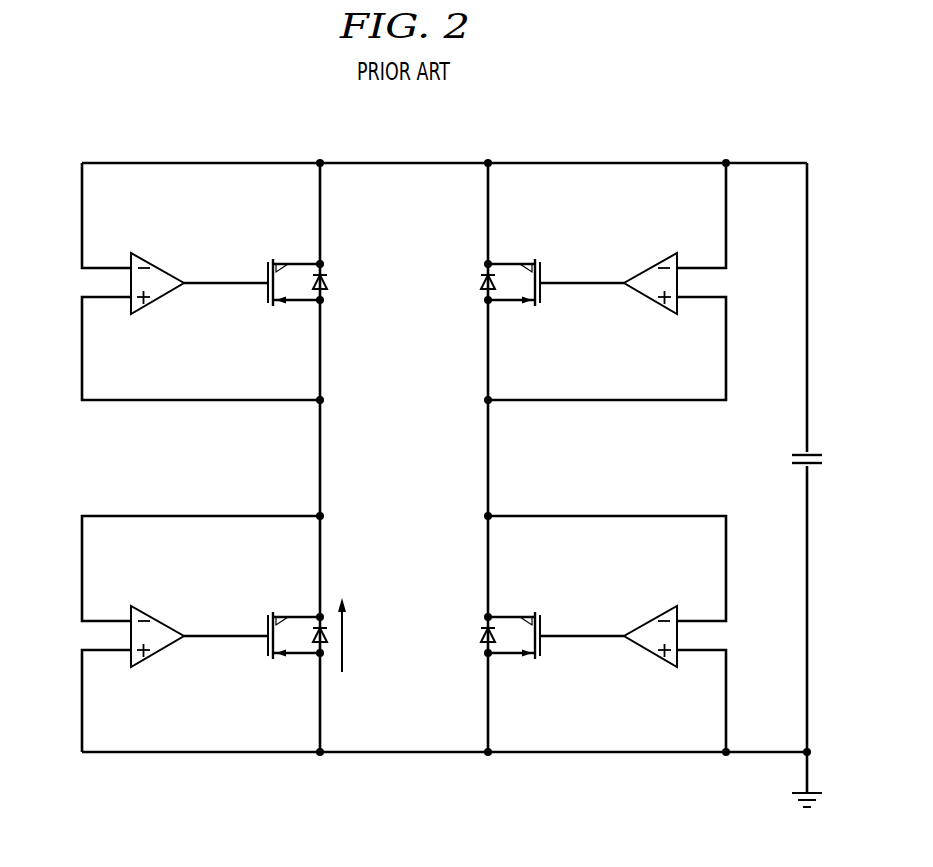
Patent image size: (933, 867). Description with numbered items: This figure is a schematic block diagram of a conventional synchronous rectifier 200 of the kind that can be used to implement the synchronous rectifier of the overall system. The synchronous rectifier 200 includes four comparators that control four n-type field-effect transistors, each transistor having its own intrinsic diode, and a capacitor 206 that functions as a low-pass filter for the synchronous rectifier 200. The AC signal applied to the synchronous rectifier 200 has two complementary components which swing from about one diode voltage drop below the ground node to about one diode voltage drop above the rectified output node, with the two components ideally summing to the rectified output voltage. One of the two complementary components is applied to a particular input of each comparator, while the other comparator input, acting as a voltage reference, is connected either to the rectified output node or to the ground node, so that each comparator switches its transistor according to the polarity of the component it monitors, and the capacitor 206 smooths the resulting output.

The synchronous rectifier 200 is at (420, 118).
The capacitor 206 is at (826, 460).